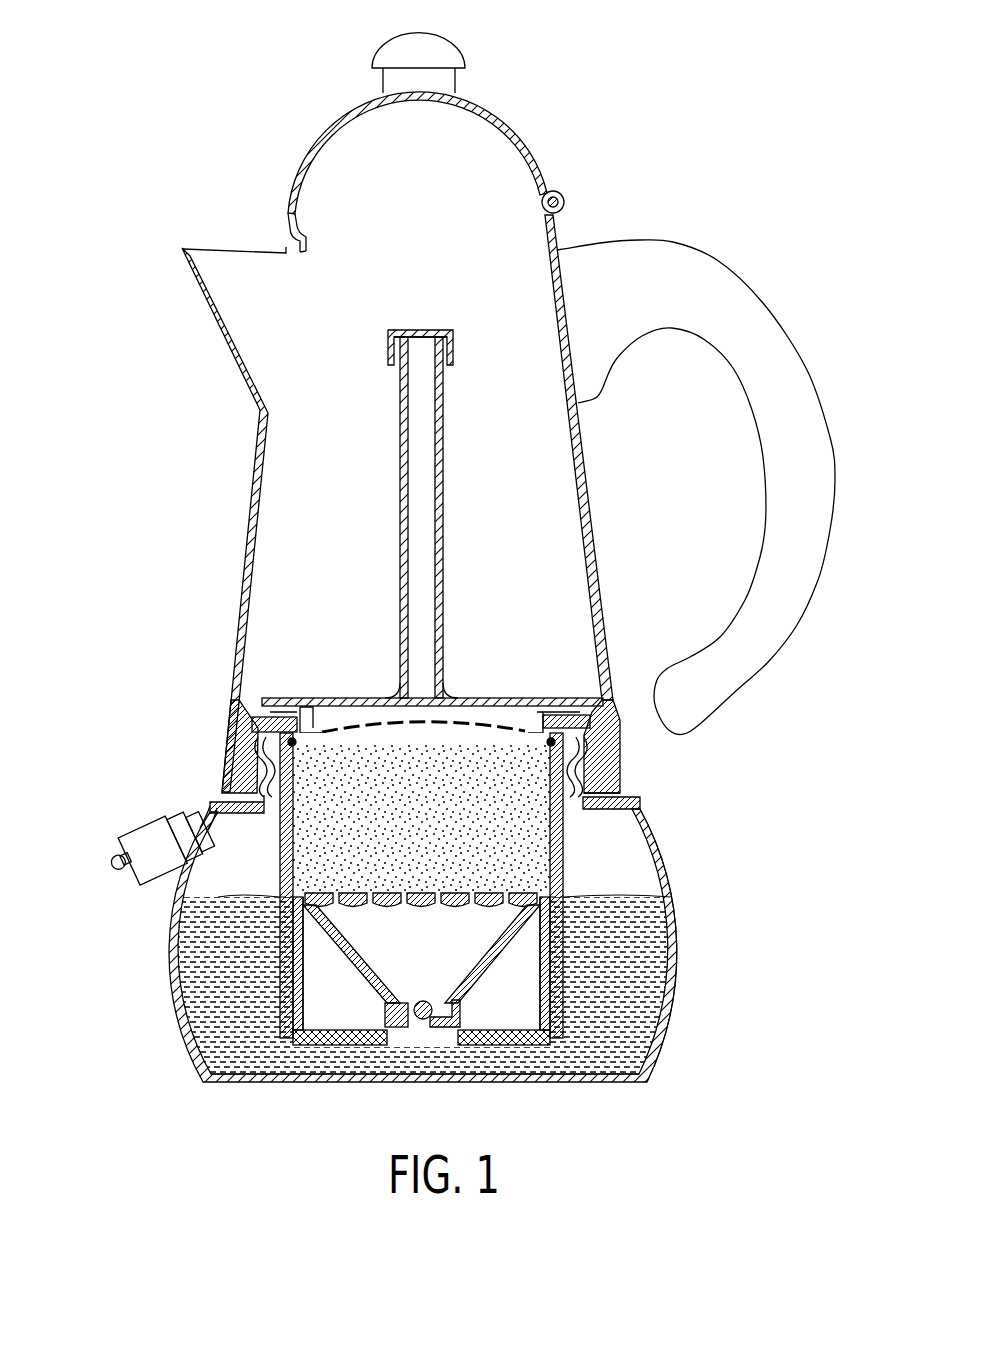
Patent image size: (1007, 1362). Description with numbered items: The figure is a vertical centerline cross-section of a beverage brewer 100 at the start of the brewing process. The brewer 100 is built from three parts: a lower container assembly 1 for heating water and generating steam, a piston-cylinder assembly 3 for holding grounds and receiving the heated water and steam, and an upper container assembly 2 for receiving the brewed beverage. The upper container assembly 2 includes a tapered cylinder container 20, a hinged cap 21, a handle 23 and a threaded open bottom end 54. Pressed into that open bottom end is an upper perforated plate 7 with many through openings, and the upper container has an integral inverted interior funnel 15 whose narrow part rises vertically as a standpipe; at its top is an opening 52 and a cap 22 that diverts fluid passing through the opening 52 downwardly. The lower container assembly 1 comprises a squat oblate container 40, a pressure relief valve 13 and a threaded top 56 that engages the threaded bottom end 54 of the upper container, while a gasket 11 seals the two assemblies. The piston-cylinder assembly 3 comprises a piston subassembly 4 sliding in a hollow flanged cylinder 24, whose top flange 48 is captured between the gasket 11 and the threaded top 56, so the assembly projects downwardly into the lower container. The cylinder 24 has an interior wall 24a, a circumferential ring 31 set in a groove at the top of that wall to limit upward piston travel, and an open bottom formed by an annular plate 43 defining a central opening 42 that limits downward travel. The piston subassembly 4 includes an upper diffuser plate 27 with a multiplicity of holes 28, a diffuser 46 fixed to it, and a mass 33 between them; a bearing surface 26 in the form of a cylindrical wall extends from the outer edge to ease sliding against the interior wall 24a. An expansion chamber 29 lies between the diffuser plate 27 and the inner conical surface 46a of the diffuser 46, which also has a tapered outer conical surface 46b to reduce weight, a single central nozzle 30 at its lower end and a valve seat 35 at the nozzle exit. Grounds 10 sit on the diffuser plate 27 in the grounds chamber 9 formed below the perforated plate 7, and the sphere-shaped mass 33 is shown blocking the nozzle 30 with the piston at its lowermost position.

The brewer 100 is at (571, 94).
The hinged cap 21 is at (338, 122).
The handle 23 is at (658, 240).
The cap 22 is at (446, 335).
The opening 52 is at (428, 340).
The inverted interior funnel 15 is at (443, 418).
The upper container assembly 2 is at (188, 455).
The tapered cylinder container 20 is at (250, 510).
The upper perforated plate 7 is at (480, 727).
The grounds chamber 9 is at (393, 740).
The circumferential ring 31 is at (540, 712).
The gasket 11 is at (262, 712).
The grounds 10 is at (258, 742).
The top flange 48 is at (577, 712).
The piston subassembly 4 is at (223, 792).
The threaded top 56 is at (577, 742).
The threaded open bottom end 54 is at (603, 777).
The piston-cylinder assembly 3 is at (278, 852).
The hollow flanged cylinder 24 is at (290, 945).
The interior wall 24a is at (590, 800).
The squat oblate container 40 is at (677, 957).
The expansion chamber 29 is at (545, 942).
The annular plate 43 is at (330, 1046).
The valve seat 35 is at (315, 1033).
The diffuser 46 is at (300, 912).
The mass 33 is at (335, 975).
The upper diffuser plate 27 is at (545, 868).
The holes 28 is at (455, 893).
The bearing surface 26 is at (300, 985).
The outer conical surface 46b is at (540, 990).
The central opening 42 is at (393, 1047).
The nozzle 30 is at (485, 1010).
The inner conical surface 46a is at (517, 1035).
The pressure relief valve 13 is at (128, 820).
The lower container assembly 1 is at (740, 855).